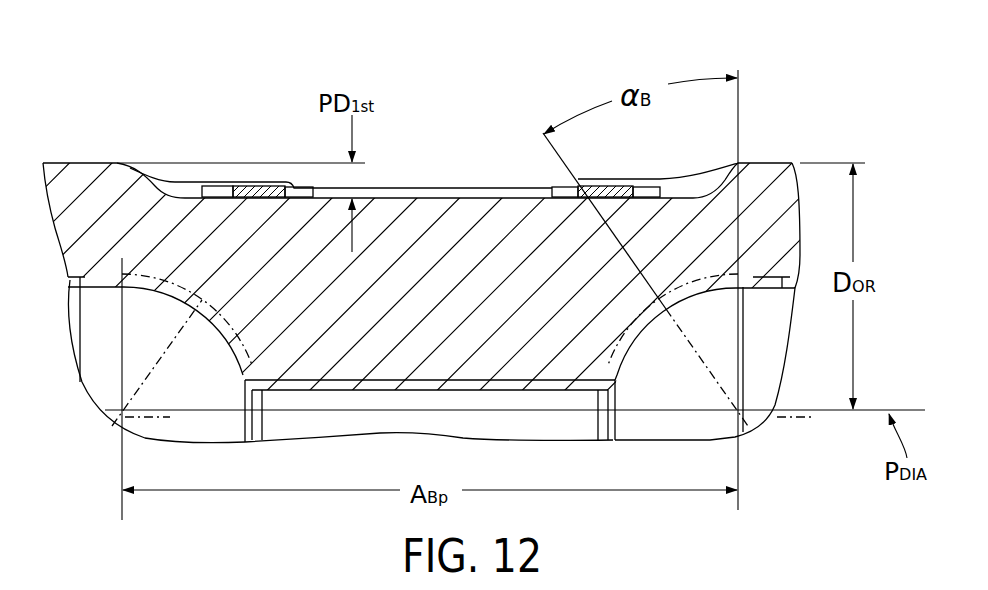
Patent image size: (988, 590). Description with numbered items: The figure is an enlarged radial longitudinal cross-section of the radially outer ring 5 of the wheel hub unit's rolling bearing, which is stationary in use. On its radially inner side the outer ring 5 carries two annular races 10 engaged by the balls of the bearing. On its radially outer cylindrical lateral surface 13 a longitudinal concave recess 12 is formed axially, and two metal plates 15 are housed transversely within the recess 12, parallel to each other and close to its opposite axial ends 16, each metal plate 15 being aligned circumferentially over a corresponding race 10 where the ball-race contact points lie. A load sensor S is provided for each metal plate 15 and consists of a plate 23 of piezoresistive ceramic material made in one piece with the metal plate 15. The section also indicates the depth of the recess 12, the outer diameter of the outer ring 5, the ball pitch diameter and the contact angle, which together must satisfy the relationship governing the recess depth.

The radially outer ring 5 is at (420, 225).
The annular race 10 is at (165, 308).
The longitudinal concave recess 12 is at (168, 182).
The radially outer cylindrical lateral surface 13 is at (50, 161).
The metal plate 15 is at (303, 187).
The opposite axial ends 16 is at (102, 161).
The plate of piezoresistive ceramic material 23 is at (256, 181).
The load sensor S is at (199, 148).